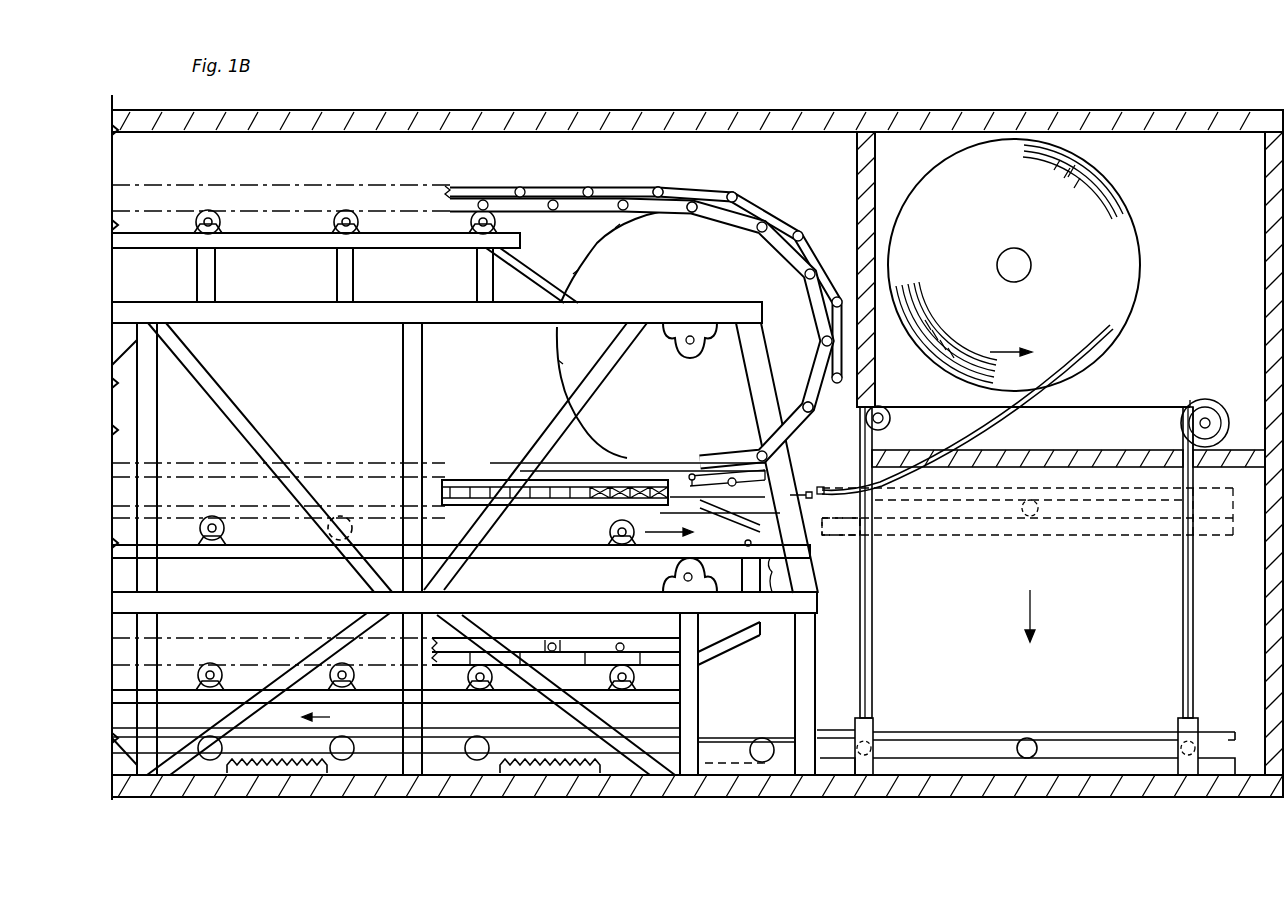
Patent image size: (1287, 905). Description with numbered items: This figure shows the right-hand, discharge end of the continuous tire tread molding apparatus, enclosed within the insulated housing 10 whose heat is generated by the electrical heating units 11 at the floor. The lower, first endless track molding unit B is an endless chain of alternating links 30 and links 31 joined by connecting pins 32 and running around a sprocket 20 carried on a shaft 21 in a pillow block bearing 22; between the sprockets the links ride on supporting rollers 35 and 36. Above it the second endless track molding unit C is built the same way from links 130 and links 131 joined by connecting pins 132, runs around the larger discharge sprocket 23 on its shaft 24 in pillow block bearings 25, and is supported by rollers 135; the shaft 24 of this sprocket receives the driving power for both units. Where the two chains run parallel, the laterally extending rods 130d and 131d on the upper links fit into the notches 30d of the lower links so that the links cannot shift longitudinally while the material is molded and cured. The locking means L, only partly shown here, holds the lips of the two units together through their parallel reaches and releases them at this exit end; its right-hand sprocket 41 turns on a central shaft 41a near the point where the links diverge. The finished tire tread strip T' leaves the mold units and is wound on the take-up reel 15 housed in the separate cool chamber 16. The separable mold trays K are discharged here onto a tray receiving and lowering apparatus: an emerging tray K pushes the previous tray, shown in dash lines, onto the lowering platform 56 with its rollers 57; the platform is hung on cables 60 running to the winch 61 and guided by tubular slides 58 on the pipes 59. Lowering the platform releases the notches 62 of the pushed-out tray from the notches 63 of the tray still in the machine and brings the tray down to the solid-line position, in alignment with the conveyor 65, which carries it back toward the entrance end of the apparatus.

The insulated housing 10 is at (508, 110).
The electrical heating units 11 is at (270, 768).
The take-up reel 15 is at (1115, 236).
The separate chamber 16 is at (918, 165).
The sprockets 20 is at (622, 566).
The shafts 21 is at (694, 577).
The pillow block bearings 22 is at (672, 592).
The sprockets 23 is at (603, 286).
The shaft 24 is at (692, 334).
The pillow block bearings 25 is at (680, 350).
The links 30 is at (638, 650).
The notches 30d is at (700, 668).
The links 31 is at (593, 645).
The connecting pins 32 is at (550, 645).
The supporting rollers 35 is at (226, 526).
The supporting rollers 36 is at (216, 666).
The sprockets 41 is at (598, 478).
The central shaft 41a is at (612, 460).
The lowering platform 56 is at (962, 530).
The rollers 57 is at (1032, 516).
The tubular slides 58 is at (856, 720).
The pipes 59 is at (872, 607).
The cables 60 is at (925, 404).
The winch 61 is at (1208, 399).
The notches 62 is at (822, 486).
The notches 63 is at (803, 502).
The conveyor 65 is at (735, 740).
The links 130 is at (598, 203).
The laterally extending rods 130d is at (735, 192).
The links 131 is at (662, 190).
The laterally extending rods 131d is at (655, 186).
The connecting pins 132 is at (690, 212).
The rollers 135 is at (530, 232).
The second endless track molding unit C is at (610, 183).
The locking means L is at (478, 470).
The mold trays K is at (362, 732).
The first endless track molding unit B is at (776, 584).
The tire tread strip T' is at (967, 409).